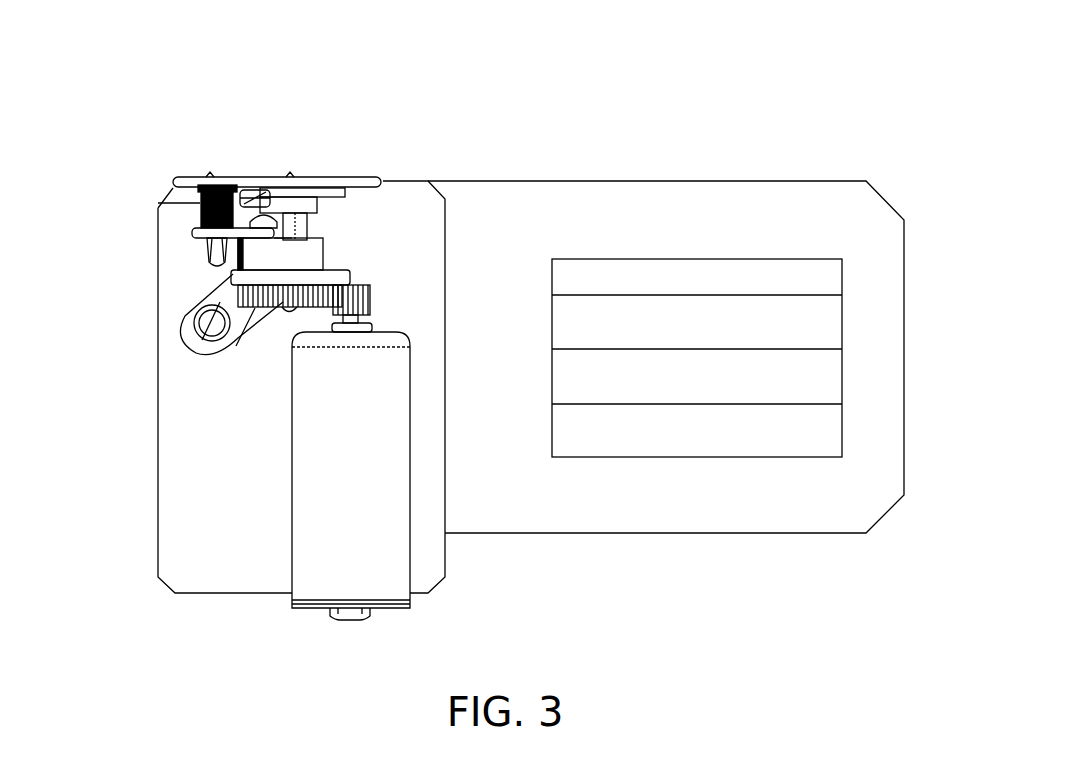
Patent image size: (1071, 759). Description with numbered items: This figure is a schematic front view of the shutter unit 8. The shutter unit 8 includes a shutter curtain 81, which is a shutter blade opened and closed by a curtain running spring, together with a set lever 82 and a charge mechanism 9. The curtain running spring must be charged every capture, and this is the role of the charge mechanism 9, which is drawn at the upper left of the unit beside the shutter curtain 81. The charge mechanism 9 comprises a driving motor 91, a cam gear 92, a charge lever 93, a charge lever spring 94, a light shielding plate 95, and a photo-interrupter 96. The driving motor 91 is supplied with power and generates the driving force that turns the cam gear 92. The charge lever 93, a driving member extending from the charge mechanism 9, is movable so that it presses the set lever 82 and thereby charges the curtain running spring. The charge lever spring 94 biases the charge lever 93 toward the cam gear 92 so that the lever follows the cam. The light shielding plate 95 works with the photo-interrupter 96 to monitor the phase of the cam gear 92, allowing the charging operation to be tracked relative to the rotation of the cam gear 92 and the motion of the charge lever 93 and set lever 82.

The shutter unit 8 is at (796, 143).
The shutter curtain 81 is at (776, 325).
The charge mechanism 9 is at (177, 197).
The driving motor 91 is at (365, 515).
The cam gear 92 is at (297, 270).
The charge lever 93 is at (223, 240).
The charge lever spring 94 is at (200, 206).
The light shielding plate 95 is at (287, 189).
The photo-interrupter 96 is at (250, 190).
The set lever 82 is at (200, 352).